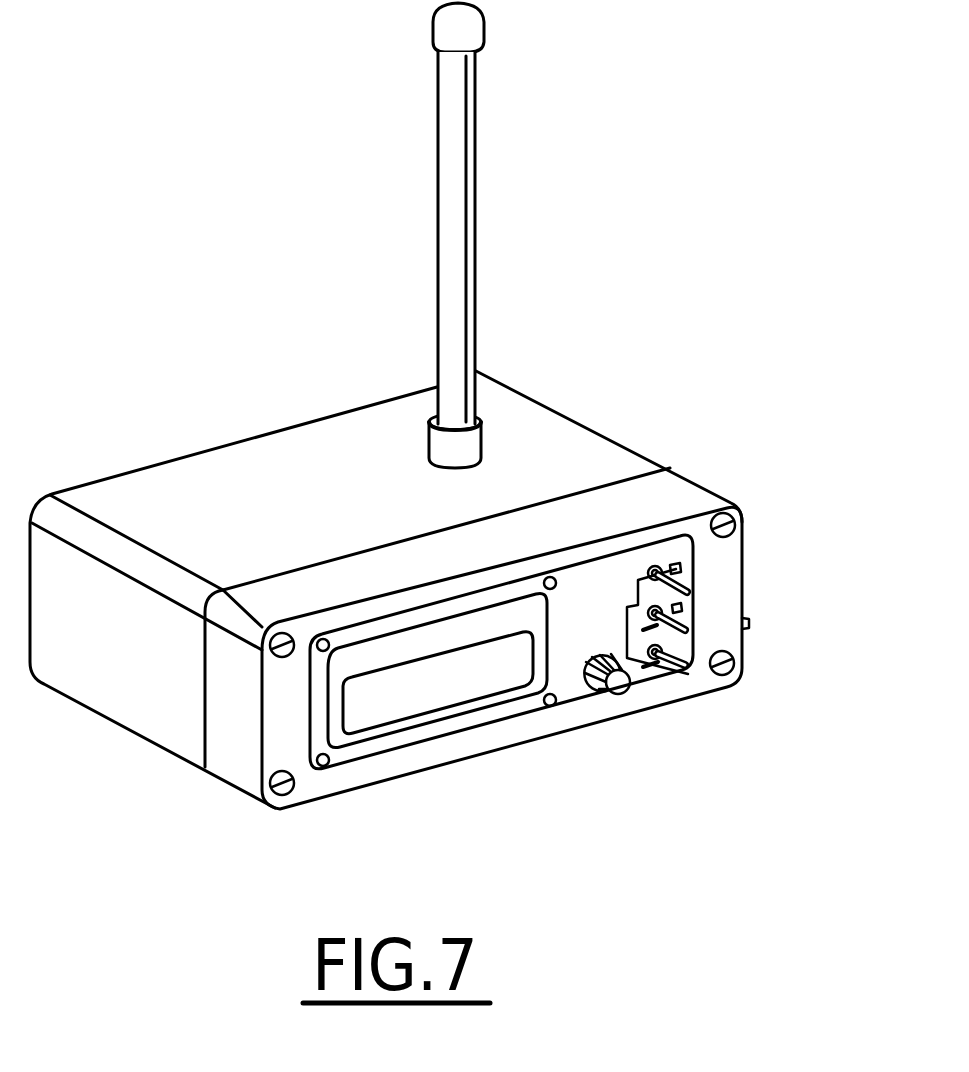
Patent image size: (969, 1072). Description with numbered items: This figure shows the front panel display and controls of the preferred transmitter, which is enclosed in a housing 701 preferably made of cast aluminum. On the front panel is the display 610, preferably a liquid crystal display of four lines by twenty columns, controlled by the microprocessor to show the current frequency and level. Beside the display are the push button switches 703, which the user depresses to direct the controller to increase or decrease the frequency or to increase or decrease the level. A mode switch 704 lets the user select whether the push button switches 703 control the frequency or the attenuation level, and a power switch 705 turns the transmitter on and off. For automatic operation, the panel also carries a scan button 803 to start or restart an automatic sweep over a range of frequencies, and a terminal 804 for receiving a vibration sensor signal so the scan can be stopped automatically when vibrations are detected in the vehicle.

The housing 701 is at (610, 435).
The display 610 is at (507, 707).
The push button switches 703 is at (683, 607).
The mode switch 704 is at (683, 663).
The power switch 705 is at (622, 694).
The scan button 803 is at (689, 669).
The terminal 804 is at (749, 622).